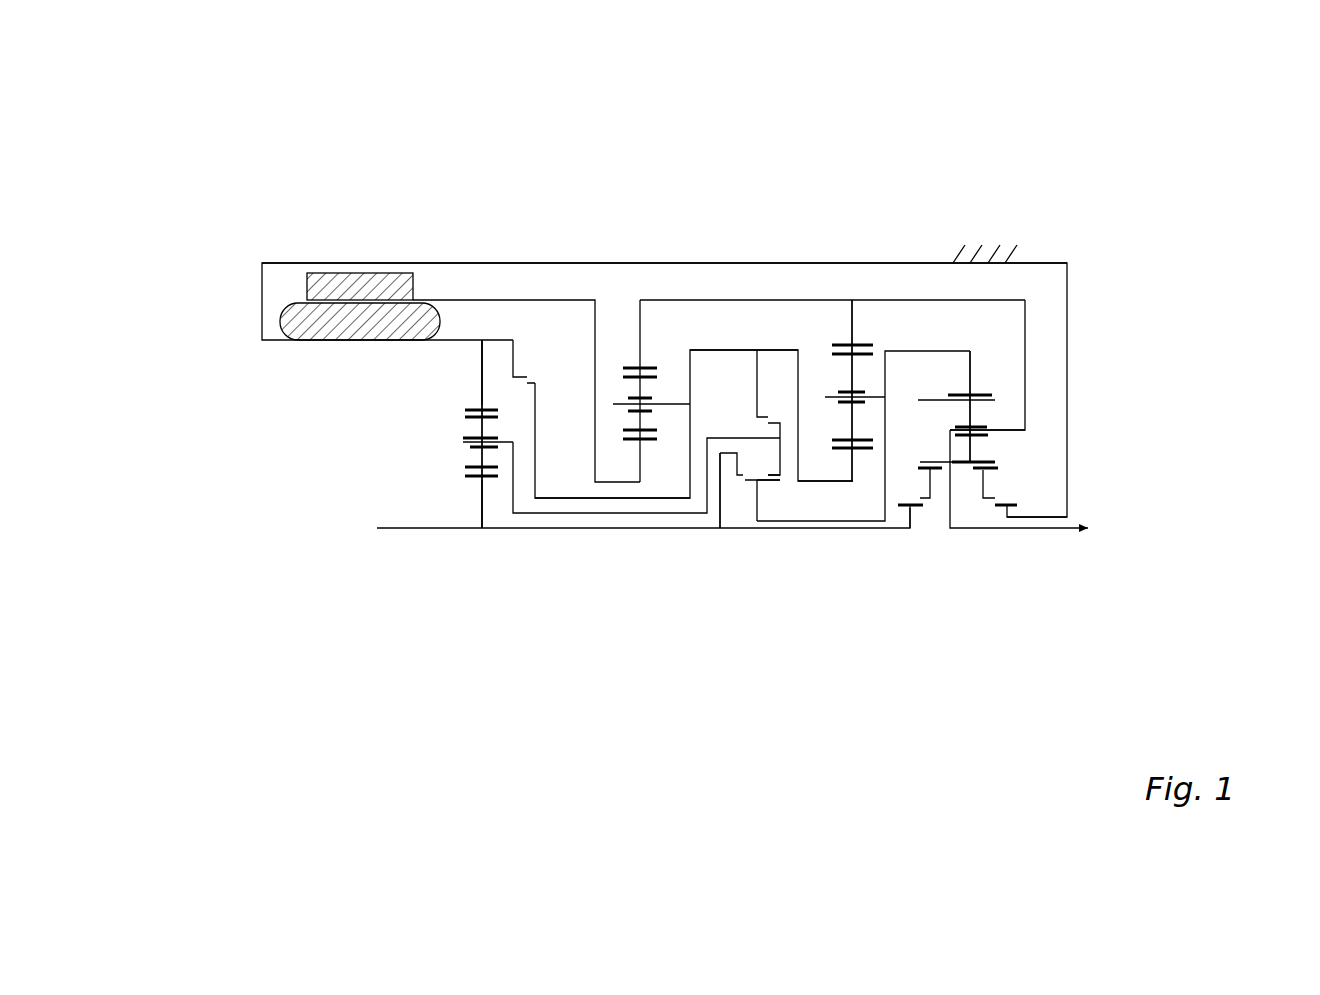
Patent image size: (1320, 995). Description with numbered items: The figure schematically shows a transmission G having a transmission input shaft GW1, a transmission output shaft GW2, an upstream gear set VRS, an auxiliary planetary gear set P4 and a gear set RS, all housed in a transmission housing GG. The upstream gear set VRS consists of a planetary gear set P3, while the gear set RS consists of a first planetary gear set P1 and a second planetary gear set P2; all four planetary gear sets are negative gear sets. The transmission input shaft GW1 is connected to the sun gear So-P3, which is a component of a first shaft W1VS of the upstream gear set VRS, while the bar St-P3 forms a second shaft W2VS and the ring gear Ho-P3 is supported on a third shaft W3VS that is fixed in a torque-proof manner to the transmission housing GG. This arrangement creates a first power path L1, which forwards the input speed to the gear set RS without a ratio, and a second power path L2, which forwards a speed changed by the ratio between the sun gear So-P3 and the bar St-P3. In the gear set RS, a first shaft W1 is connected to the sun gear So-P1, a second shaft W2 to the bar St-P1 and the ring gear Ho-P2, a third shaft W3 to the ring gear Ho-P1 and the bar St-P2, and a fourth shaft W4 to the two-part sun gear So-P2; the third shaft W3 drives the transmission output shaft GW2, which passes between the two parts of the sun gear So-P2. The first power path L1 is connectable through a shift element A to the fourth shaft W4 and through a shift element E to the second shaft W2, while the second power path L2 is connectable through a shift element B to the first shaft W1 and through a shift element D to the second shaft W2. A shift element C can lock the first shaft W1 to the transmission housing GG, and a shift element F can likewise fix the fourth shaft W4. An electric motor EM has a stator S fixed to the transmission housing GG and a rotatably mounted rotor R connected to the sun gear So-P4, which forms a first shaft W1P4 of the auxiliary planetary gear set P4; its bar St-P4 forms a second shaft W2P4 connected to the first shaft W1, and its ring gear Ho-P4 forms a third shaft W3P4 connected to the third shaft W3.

The transmission G is at (375, 92).
The transmission housing GG is at (1067, 278).
The electric motor EM is at (335, 211).
The rotor R is at (360, 293).
The stator S is at (415, 325).
The first shaft of the auxiliary planetary gear set W1P4 is at (530, 297).
The second shaft of the auxiliary planetary gear set W2P4 is at (720, 349).
The third shaft of the auxiliary planetary gear set W3P4 is at (790, 298).
The ring gear of the auxiliary planetary gear set Ho-P4 is at (630, 366).
The bar of the auxiliary planetary gear set St-P4 is at (654, 397).
The sun gear of the auxiliary planetary gear set So-P4 is at (630, 445).
The ring gear of the first planetary gear set Ho-P1 is at (863, 345).
The bar of the first planetary gear set St-P1 is at (872, 390).
The sun gear of the first planetary gear set So-P1 is at (845, 452).
The ring gear of the second planetary gear set Ho-P2 is at (982, 390).
The bar of the second planetary gear set St-P2 is at (1003, 425).
The sun gear of the second planetary gear set So-P2 is at (982, 503).
The ring gear of the planetary gear set P3 Ho-P3 is at (477, 410).
The bar of the planetary gear set P3 St-P3 is at (467, 447).
The sun gear of the planetary gear set P3 So-P3 is at (470, 477).
The first shaft of the gear set RS W1 is at (818, 475).
The second shaft of the gear set RS W2 is at (955, 347).
The third shaft of the gear set RS W3 is at (1028, 328).
The fourth shaft of the gear set RS W4 is at (992, 480).
The first shaft of the upstream gear set W1VS is at (480, 503).
The second shaft of the upstream gear set W2VS is at (533, 517).
The third shaft of the upstream gear set W3VS is at (480, 357).
The transmission input shaft GW1 is at (390, 530).
The transmission output shaft GW2 is at (1057, 533).
The first planetary gear set P1 is at (855, 548).
The second planetary gear set P2 is at (977, 548).
The planetary gear set of the upstream gear set P3 is at (483, 548).
The auxiliary planetary gear set P4 is at (640, 548).
The upstream gear set VRS is at (485, 502).
The gear set RS is at (995, 620).
The first power path L1 is at (700, 532).
The second power path L2 is at (668, 520).
The shift element A is at (925, 495).
The shift element B is at (768, 412).
The shift element C is at (524, 361).
The shift element D is at (769, 491).
The shift element E is at (750, 490).
The shift element F is at (1031, 494).